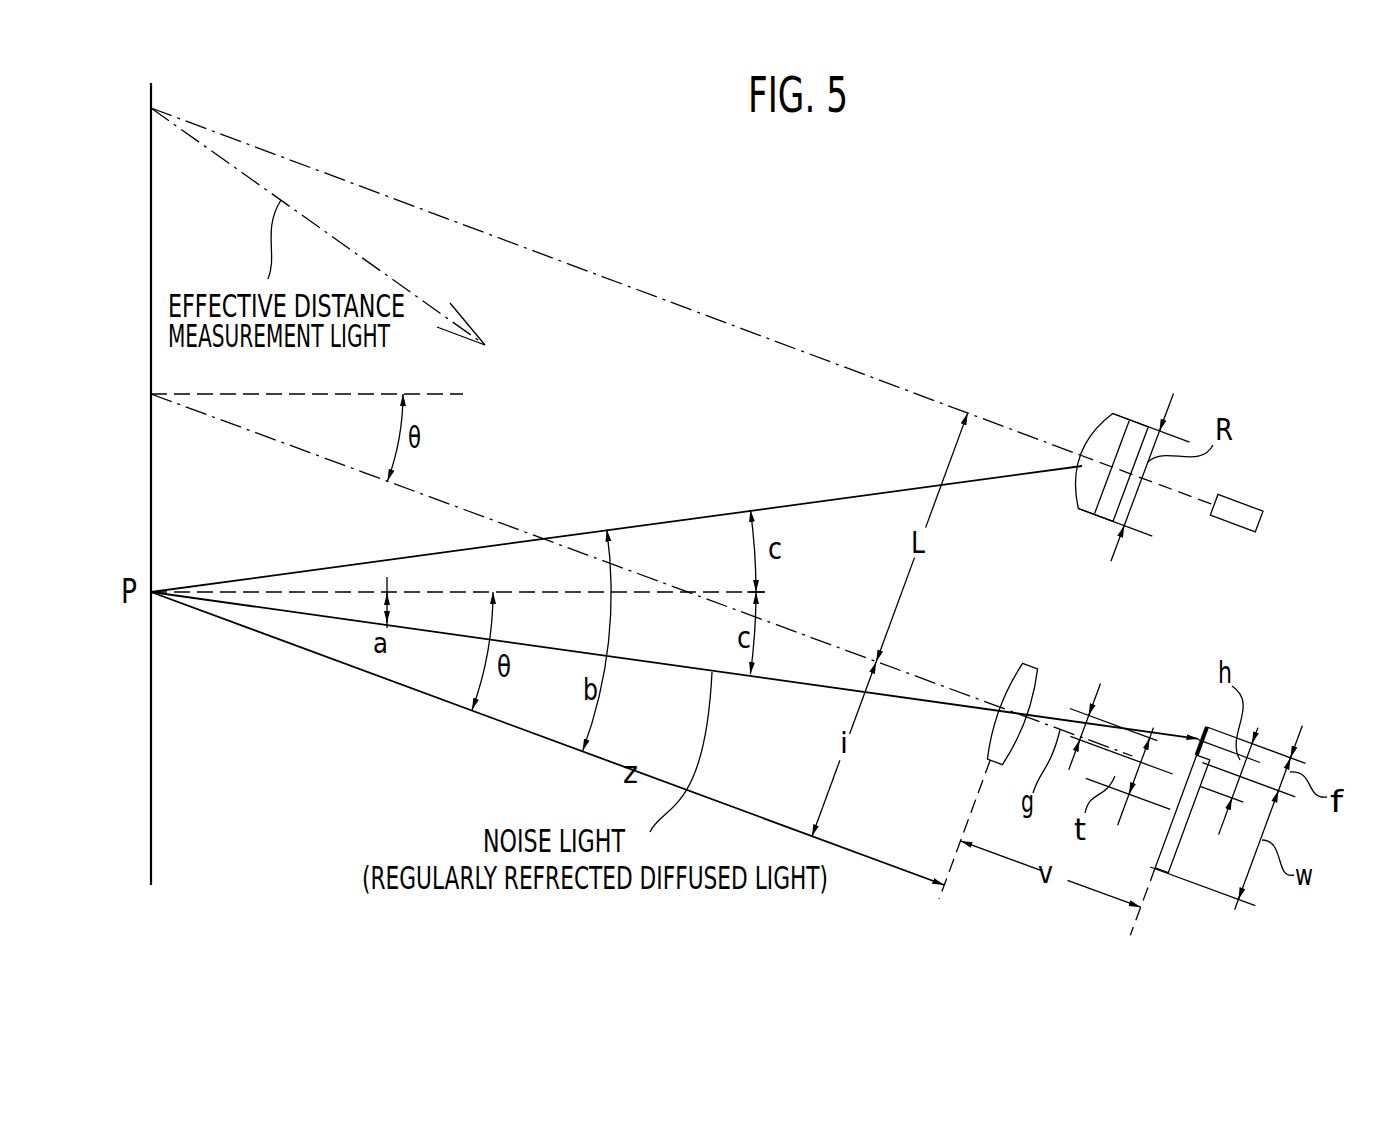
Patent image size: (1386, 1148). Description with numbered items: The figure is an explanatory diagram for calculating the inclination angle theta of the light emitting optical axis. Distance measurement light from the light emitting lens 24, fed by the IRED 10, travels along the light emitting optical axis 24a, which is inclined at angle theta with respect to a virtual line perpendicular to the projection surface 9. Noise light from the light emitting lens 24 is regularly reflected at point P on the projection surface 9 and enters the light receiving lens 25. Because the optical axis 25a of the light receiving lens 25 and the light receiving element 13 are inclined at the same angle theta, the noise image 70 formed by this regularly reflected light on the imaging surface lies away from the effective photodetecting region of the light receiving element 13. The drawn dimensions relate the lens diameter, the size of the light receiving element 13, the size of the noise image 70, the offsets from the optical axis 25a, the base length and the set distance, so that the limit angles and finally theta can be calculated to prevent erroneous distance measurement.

The projection surface 9 is at (153, 770).
The IRED 10 is at (1240, 534).
The light receiving element 13 is at (1177, 857).
The light emitting lens 24 is at (1104, 430).
The light emitting optical axis 24a is at (681, 302).
The light receiving lens 25 is at (978, 738).
The optical axis of the light receiving lens 25a is at (456, 506).
The noise image 70 is at (1202, 724).